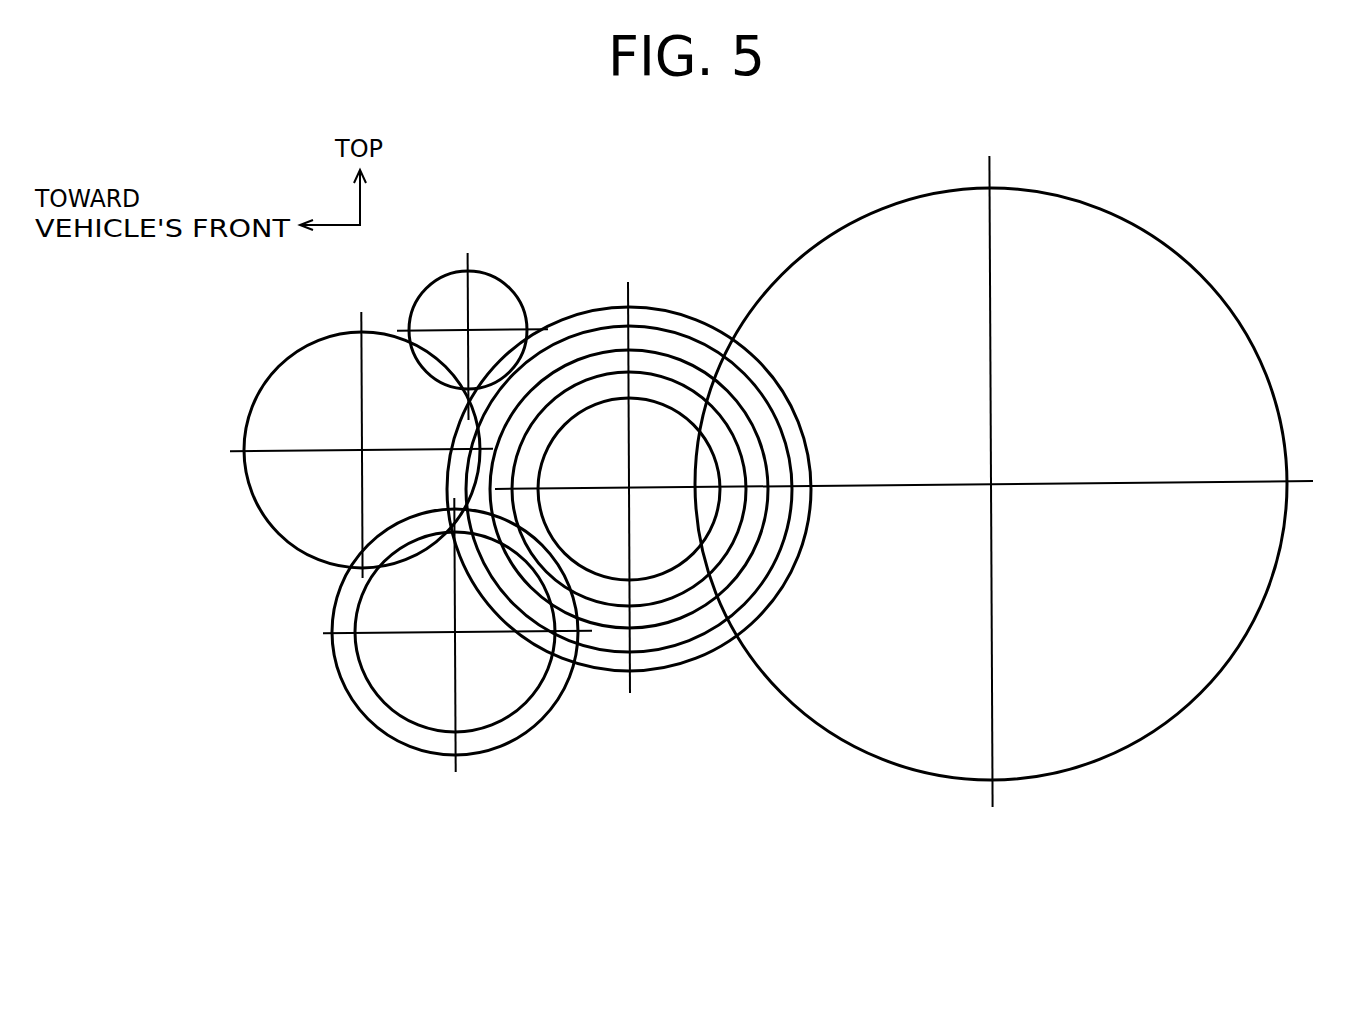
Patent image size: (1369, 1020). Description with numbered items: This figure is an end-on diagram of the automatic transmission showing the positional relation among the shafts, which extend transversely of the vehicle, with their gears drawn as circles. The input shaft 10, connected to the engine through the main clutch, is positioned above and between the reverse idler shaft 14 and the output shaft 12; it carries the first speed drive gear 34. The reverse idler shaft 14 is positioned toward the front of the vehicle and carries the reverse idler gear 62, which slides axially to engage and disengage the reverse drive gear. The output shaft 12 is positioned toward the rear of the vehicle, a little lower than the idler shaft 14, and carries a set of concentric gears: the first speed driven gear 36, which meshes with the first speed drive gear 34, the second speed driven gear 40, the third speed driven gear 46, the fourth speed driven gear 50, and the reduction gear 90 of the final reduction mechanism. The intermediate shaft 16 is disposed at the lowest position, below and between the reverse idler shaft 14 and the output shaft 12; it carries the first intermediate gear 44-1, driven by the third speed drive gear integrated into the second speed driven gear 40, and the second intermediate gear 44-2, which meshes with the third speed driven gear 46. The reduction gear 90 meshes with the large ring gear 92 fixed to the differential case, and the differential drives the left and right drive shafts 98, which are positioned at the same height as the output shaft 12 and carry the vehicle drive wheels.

The input shaft 10 is at (475, 330).
The output shaft 12 is at (637, 480).
The reverse idler shaft 14 is at (360, 452).
The intermediate shaft 16 is at (452, 633).
The first speed drive gear 34 is at (448, 275).
The first speed driven gear 36 is at (715, 655).
The second speed driven gear 40 is at (677, 650).
The first intermediate gear 44-1 is at (358, 667).
The second intermediate gear 44-2 is at (417, 750).
The third speed driven gear 46 is at (650, 630).
The fourth speed driven gear 50 is at (623, 607).
The reverse idler gear 62 is at (265, 383).
The reduction gear 90 is at (602, 578).
The ring gear 92 is at (1258, 612).
The drive shaft 98 is at (995, 482).